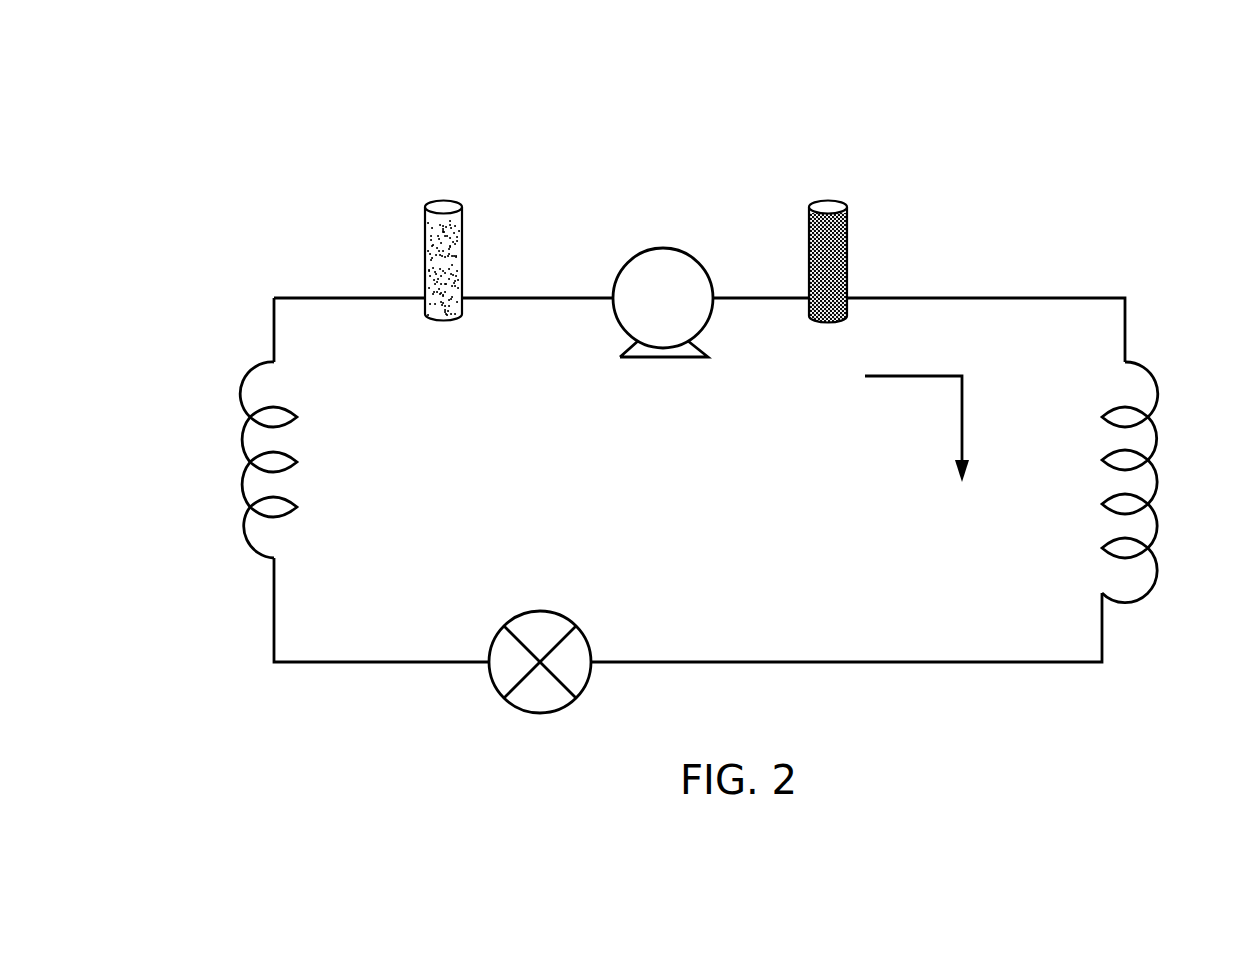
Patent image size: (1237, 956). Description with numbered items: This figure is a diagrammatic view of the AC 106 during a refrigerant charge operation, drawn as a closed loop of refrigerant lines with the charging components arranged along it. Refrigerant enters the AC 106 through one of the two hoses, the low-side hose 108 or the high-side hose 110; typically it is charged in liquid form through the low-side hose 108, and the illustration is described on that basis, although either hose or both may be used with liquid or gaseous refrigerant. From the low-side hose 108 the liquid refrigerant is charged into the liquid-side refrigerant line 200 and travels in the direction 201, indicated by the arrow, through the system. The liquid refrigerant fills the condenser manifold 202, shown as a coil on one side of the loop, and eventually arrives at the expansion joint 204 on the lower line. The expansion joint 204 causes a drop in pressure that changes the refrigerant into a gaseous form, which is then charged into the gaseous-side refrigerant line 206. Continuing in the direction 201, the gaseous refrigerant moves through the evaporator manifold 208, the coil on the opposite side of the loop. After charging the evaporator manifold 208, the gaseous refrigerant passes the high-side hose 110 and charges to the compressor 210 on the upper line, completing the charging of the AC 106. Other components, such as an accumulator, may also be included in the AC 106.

The AC 106 is at (1176, 125).
The low-side hose 108 is at (826, 205).
The high-side hose 110 is at (441, 205).
The liquid-side refrigerant line 200 is at (1010, 297).
The direction 201 is at (875, 377).
The condenser manifold 202 is at (1158, 438).
The expansion joint 204 is at (540, 713).
The gaseous-side refrigerant line 206 is at (361, 665).
The evaporator manifold 208 is at (242, 395).
The compressor 210 is at (662, 248).